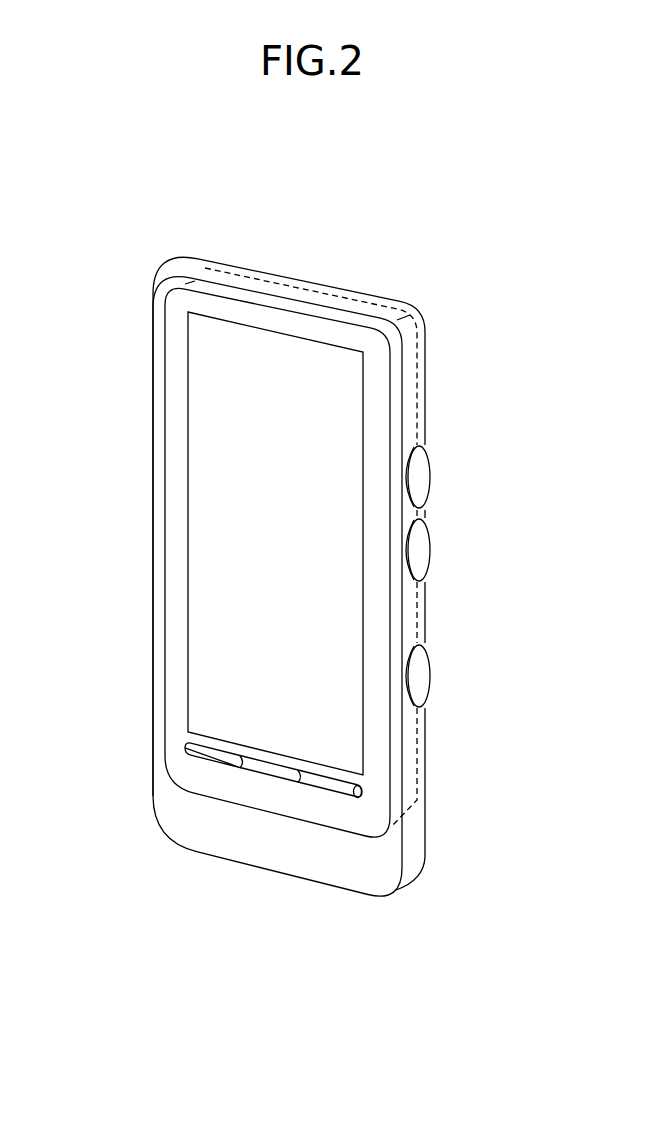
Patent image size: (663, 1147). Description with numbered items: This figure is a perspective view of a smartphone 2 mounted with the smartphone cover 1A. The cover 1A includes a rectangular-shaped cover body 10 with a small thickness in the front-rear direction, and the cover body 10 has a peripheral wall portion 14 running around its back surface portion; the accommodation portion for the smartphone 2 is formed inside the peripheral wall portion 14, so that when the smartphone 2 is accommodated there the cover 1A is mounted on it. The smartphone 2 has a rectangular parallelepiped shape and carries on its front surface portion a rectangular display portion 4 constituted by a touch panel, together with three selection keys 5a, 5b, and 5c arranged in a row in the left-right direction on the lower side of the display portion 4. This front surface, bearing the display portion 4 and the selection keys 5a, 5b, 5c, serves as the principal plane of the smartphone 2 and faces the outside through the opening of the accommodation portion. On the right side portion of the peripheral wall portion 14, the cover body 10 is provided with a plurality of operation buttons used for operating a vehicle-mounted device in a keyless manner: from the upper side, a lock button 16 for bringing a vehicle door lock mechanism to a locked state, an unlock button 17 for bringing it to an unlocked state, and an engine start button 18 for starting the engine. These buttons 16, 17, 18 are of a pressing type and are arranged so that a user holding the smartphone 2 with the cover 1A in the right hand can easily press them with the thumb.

The smartphone cover 1A is at (421, 316).
The smartphone 2 is at (198, 303).
The display portion 4 is at (203, 495).
The selection key 5a is at (208, 755).
The selection key 5b is at (267, 772).
The selection key 5c is at (322, 785).
The cover body 10 is at (295, 279).
The peripheral wall portion 14 is at (153, 393).
The lock button 16 is at (420, 480).
The unlock button 17 is at (423, 550).
The engine start button 18 is at (420, 677).